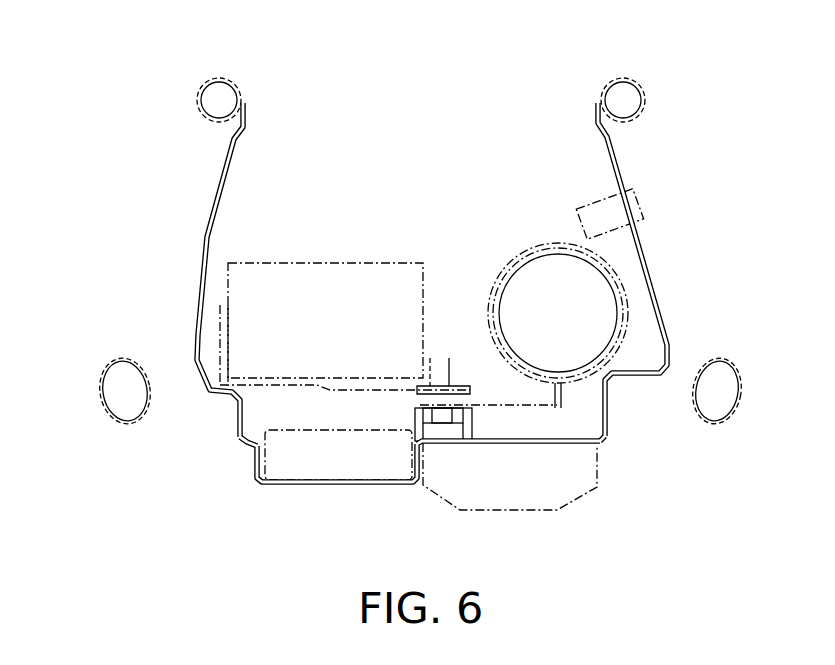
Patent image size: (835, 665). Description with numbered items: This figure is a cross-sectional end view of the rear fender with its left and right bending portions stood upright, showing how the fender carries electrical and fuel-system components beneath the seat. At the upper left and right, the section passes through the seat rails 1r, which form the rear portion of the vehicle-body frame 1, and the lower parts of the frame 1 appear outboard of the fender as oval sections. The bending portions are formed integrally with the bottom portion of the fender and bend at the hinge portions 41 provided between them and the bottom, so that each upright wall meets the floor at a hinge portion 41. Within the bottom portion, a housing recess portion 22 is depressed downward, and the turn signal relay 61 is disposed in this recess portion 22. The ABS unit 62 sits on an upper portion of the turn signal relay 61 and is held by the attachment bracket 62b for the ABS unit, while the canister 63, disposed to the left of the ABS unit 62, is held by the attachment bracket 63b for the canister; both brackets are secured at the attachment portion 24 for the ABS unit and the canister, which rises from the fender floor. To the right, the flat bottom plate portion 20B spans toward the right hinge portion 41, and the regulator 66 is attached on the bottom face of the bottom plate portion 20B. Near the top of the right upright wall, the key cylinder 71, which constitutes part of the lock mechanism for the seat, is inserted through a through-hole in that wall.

The seat rails 1r is at (208, 82).
The vehicle-body frame 1 is at (105, 383).
The hinge portion 41 is at (238, 443).
The housing recess portion 22 is at (262, 487).
The bottom plate portion 20B is at (573, 445).
The ABS unit 62 is at (334, 263).
The attachment bracket for the ABS unit 62b is at (449, 380).
The canister 63 is at (518, 258).
The attachment bracket for the canister 63b is at (493, 403).
The attachment portion for the ABS unit and the canister 24 is at (442, 413).
The turn signal relay 61 is at (265, 457).
The regulator 66 is at (582, 495).
The key cylinder 71 is at (592, 210).